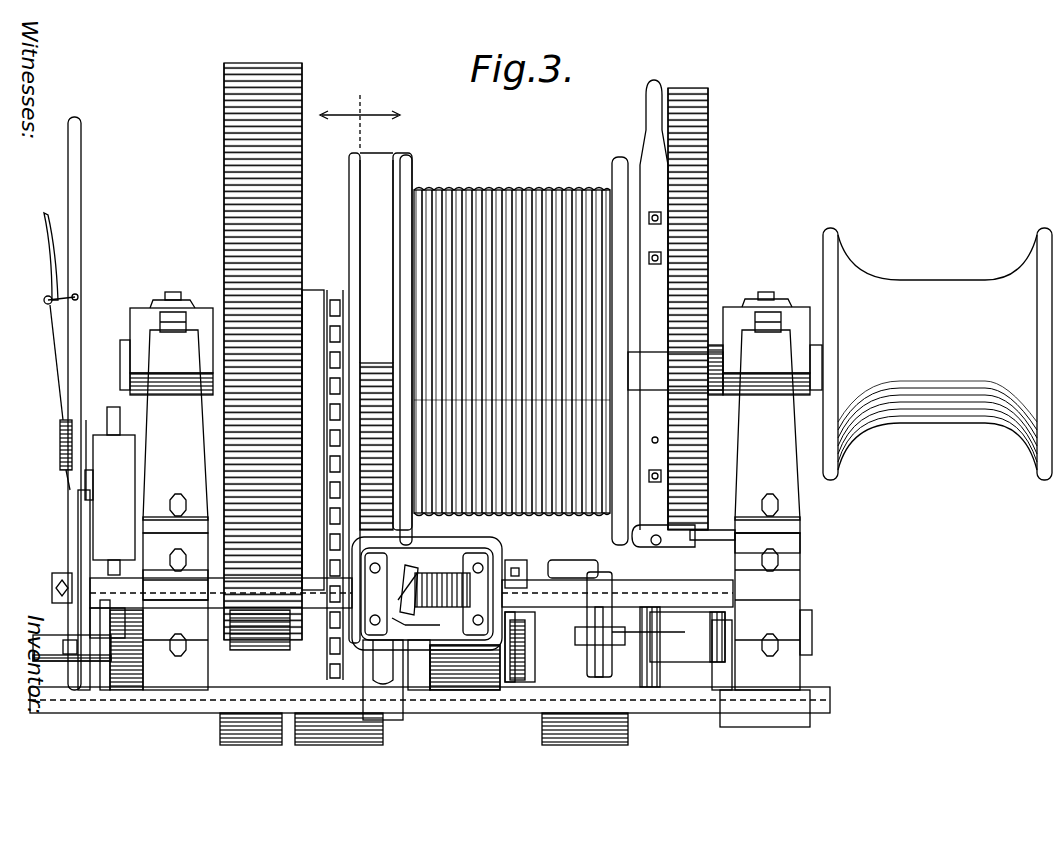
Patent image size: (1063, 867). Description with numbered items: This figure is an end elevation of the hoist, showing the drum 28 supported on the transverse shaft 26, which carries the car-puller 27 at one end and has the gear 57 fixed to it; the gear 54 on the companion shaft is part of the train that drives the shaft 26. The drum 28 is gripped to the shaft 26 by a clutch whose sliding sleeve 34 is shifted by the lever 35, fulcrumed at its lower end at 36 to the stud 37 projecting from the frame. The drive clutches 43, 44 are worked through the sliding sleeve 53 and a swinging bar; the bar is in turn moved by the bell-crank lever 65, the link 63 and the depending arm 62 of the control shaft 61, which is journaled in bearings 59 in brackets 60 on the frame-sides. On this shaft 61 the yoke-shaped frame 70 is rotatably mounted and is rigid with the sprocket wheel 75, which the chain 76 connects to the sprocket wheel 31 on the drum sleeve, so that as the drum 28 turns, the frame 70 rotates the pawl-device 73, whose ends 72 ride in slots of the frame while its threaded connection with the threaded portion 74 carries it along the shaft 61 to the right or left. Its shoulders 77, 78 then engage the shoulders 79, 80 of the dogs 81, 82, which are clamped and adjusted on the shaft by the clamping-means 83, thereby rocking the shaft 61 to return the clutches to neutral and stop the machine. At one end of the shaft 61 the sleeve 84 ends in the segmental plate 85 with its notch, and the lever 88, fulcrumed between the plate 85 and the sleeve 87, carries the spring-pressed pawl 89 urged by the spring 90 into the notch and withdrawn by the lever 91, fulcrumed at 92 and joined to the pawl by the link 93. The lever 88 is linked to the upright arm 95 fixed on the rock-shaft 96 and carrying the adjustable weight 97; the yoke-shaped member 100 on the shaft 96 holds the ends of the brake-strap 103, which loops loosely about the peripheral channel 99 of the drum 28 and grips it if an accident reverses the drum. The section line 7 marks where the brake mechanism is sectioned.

The section line 7 is at (360, 112).
The shaft 26 is at (670, 360).
The car-puller 27 is at (937, 354).
The drum 28 is at (500, 190).
The sprocket wheel 31 is at (335, 290).
The sleeve 34 is at (632, 355).
The lever 35 is at (648, 122).
The fulcrum 36 is at (657, 536).
The stud 37 is at (718, 532).
The clutch 43 is at (328, 730).
The clutch 44 is at (578, 735).
The sliding sleeve 53 is at (478, 652).
The gear 54 is at (700, 255).
The gear 57 is at (245, 178).
The bearings 59 is at (790, 548).
The brackets 60 is at (773, 611).
The shaft 61 is at (225, 583).
The depending arm 62 is at (600, 600).
The link 63 is at (600, 670).
The bell-crank lever 65 is at (665, 634).
The yoke-shaped frame 70 is at (496, 547).
The ends 72 is at (404, 575).
The pawl-device 73 is at (419, 584).
The threaded portion 74 is at (450, 575).
The sprocket wheel 75 is at (330, 585).
The chain 76 is at (315, 448).
The shoulder 77 is at (404, 584).
The shoulder 78 is at (416, 612).
The shoulder 79 is at (375, 594).
The shoulder 80 is at (521, 572).
The dog 81 is at (368, 605).
The dog 82 is at (573, 572).
The clamping-means 83 is at (375, 640).
The sleeve 84 is at (110, 660).
The segmental plate 85 is at (85, 547).
The sleeve 87 is at (60, 590).
The lever 88 is at (76, 512).
The spring-pressed pawl 89 is at (86, 423).
The spring 90 is at (62, 452).
The lever 91 is at (48, 278).
The fulcrum 92 is at (82, 297).
The link 93 is at (54, 358).
The upright arm 95 is at (118, 665).
The rock-shaft 96 is at (617, 643).
The weight 97 is at (114, 491).
The peripheral channel 99 is at (408, 153).
The yoke-shaped member 100 is at (392, 712).
The brake-strap 103 is at (373, 160).